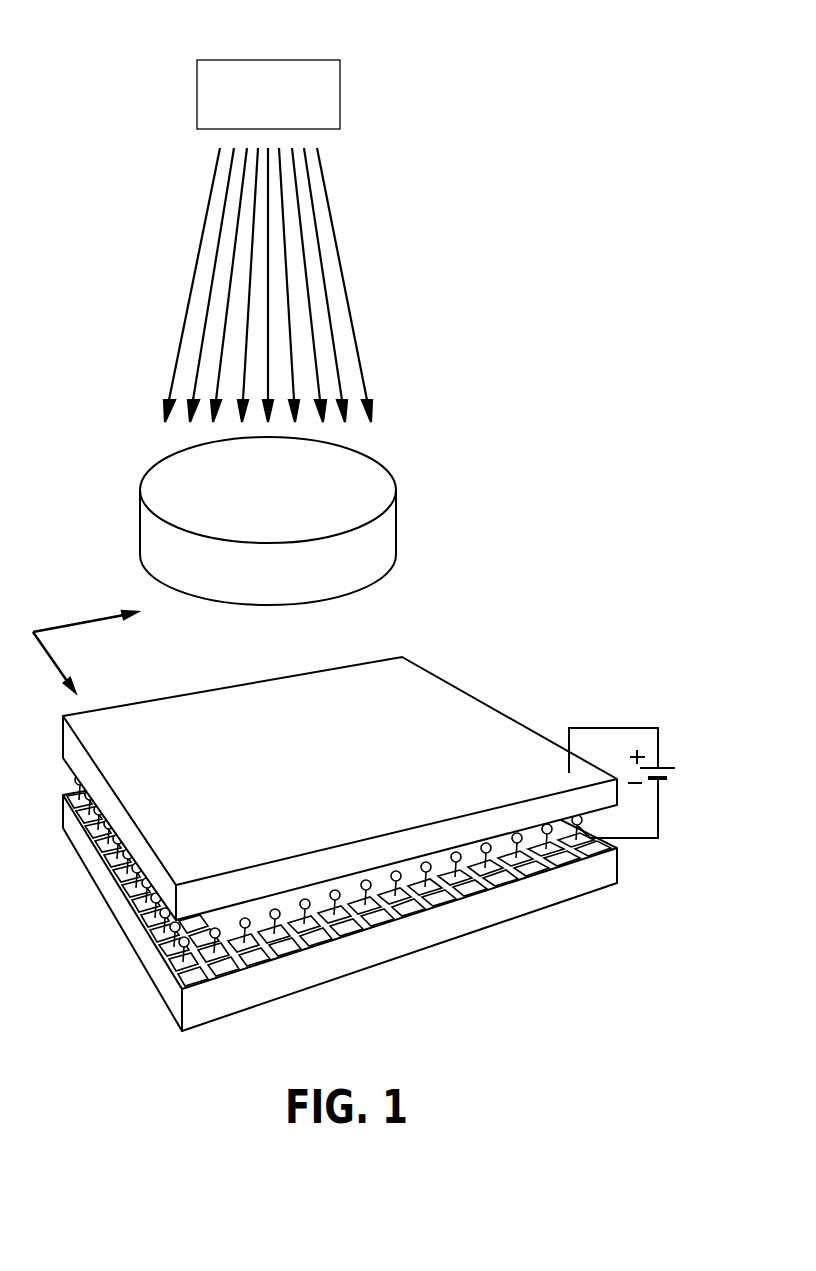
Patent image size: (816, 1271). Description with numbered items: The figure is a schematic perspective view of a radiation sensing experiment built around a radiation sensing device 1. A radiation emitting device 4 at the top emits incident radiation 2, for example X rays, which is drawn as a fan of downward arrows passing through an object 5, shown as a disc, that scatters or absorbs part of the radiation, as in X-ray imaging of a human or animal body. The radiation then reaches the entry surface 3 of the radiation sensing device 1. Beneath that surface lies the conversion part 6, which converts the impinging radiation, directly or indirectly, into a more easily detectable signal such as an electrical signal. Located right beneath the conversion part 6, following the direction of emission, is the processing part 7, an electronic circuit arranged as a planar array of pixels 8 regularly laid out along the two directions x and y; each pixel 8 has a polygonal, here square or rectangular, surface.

The radiation sensing device 1 is at (119, 1081).
The incident radiation 2 is at (347, 290).
The entry surface 3 is at (340, 771).
The radiation emitting device 4 is at (340, 97).
The object 5 is at (397, 535).
The conversion part 6 is at (525, 753).
The processing part 7 is at (358, 883).
The pixels 8 is at (550, 858).